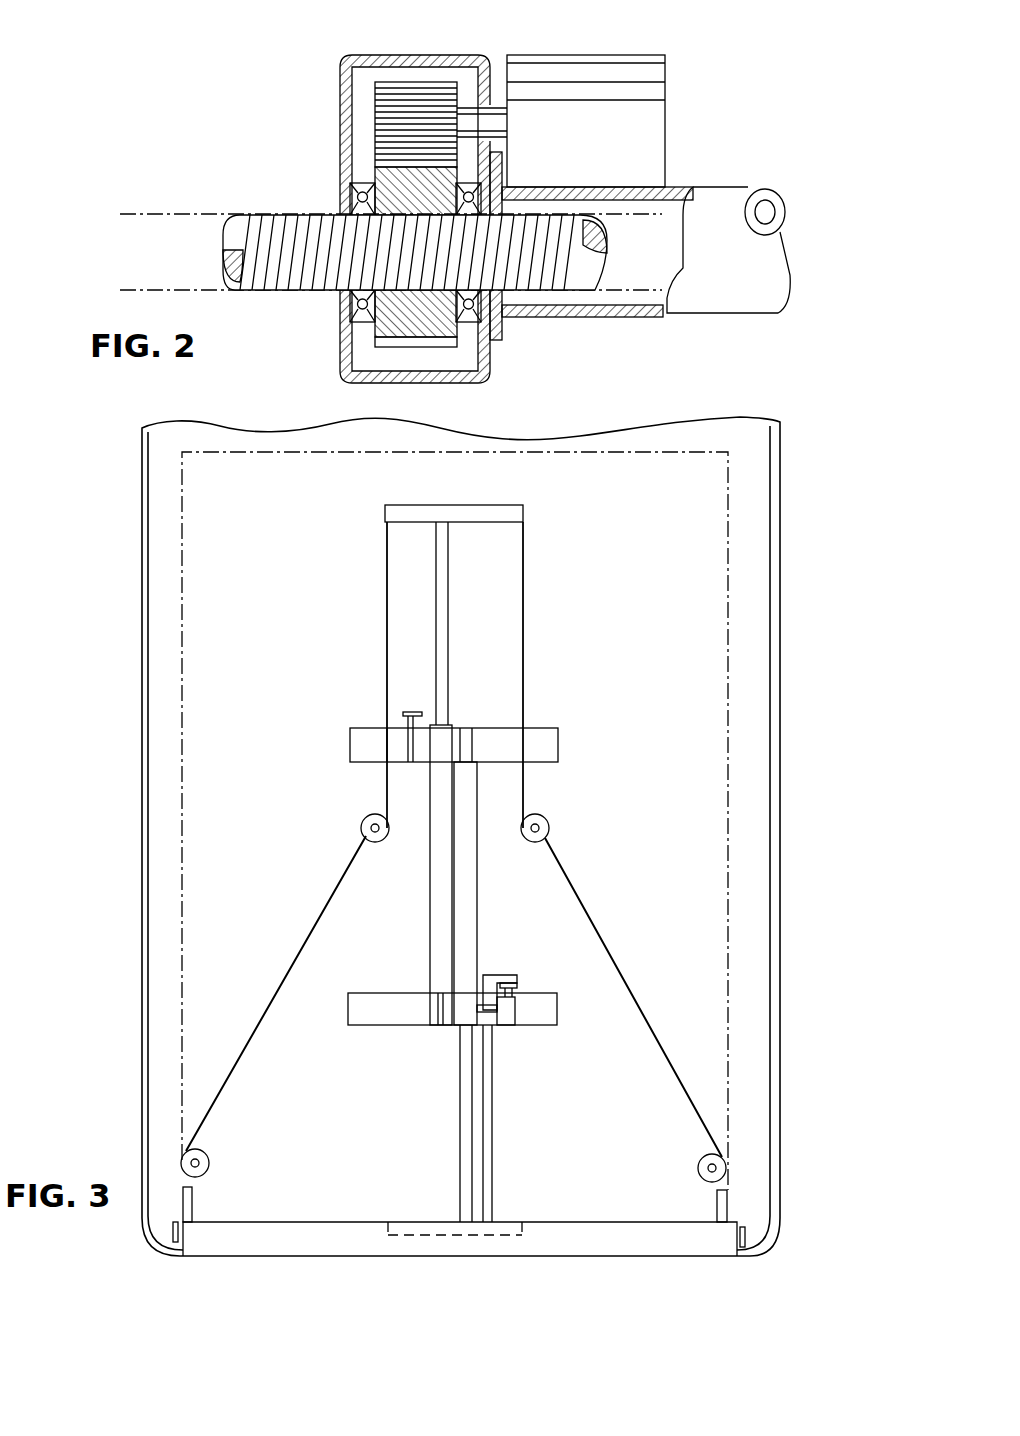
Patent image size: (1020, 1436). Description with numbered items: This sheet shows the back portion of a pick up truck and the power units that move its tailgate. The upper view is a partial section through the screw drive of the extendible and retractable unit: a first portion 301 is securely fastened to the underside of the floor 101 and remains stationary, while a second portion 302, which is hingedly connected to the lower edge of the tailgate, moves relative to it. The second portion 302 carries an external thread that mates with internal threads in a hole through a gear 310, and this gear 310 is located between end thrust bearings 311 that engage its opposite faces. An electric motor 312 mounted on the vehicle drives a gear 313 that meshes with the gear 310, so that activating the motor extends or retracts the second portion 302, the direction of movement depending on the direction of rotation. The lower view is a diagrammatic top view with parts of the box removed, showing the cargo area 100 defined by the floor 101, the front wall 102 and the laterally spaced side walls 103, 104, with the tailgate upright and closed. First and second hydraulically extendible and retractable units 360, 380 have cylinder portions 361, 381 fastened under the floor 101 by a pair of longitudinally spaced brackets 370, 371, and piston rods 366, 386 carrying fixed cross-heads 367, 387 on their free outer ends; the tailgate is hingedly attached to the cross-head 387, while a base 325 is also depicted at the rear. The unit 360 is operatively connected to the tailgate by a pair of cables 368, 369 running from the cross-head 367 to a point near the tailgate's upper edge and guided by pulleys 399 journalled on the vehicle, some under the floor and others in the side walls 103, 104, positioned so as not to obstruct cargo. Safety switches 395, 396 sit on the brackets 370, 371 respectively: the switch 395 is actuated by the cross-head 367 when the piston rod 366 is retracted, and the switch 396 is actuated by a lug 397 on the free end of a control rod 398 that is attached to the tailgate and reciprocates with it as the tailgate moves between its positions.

In FIG. 2, the first portion 301 is at (725, 198).
In FIG. 2, the second portion 302 is at (282, 222).
In FIG. 2, the gear 310 is at (400, 308).
In FIG. 2, the end thrust bearings 311 is at (467, 186).
In FIG. 2, the electric motor 312 is at (618, 102).
In FIG. 2, the gear 313 is at (407, 90).
In FIG. 3, the cargo area 100 is at (680, 707).
In FIG. 3, the floor 101 is at (695, 551).
In FIG. 3, the front wall 102 is at (333, 452).
In FIG. 3, the side wall 103 is at (182, 617).
In FIG. 3, the side wall 104 is at (728, 608).
In FIG. 3, the base plate 325 is at (298, 1240).
In FIG. 3, the first hydraulically extendible and retractable unit 360 is at (427, 930).
In FIG. 3, the cylinder portion 361 is at (437, 785).
In FIG. 3, the piston rod 366 is at (449, 567).
In FIG. 3, the cross-head 367 is at (523, 510).
In FIG. 3, the cable 368 is at (352, 886).
In FIG. 3, the cable 369 is at (523, 607).
In FIG. 3, the mounting bracket 370 is at (560, 742).
In FIG. 3, the mounting bracket 371 is at (380, 1020).
In FIG. 3, the second hydraulically extendible and retractable unit 380 is at (483, 937).
In FIG. 3, the cylinder portion 381 is at (465, 872).
In FIG. 3, the piston rod 386 is at (458, 1132).
In FIG. 3, the cross-head 387 is at (410, 1228).
In FIG. 3, the safety switch 395 is at (403, 745).
In FIG. 3, the safety switch 396 is at (518, 1010).
In FIG. 3, the lug 397 is at (512, 978).
In FIG. 3, the control rod 398 is at (492, 1140).
In FIG. 3, the pulleys 399 is at (550, 827).